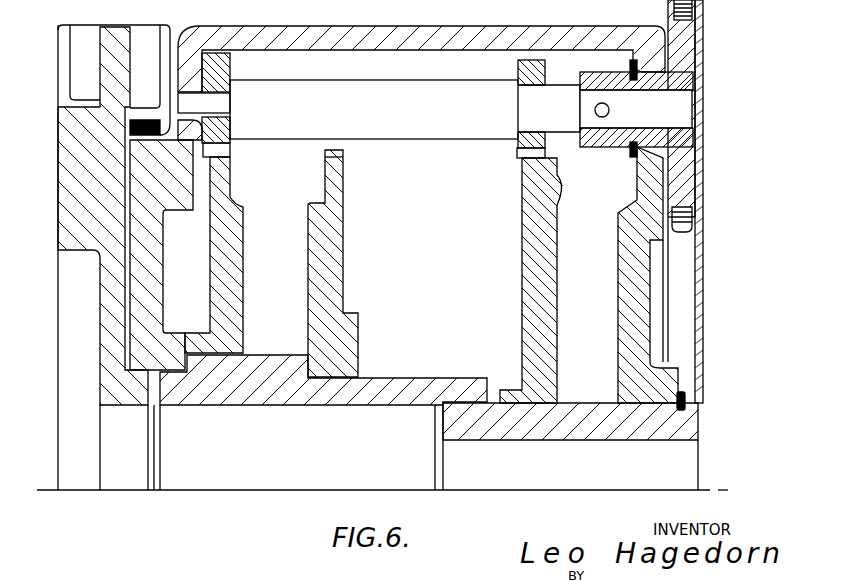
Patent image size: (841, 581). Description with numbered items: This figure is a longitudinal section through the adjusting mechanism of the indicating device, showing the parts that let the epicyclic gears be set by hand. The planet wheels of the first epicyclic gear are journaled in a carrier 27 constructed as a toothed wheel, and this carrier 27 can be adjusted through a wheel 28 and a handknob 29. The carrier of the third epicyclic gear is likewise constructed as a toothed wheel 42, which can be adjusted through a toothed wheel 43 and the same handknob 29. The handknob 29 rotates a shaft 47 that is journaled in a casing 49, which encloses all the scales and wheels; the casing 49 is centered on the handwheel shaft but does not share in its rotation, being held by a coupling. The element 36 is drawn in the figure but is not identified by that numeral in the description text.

The carrier 27 is at (243, 206).
The wheel 28 is at (230, 63).
The handknob 29 is at (686, 232).
The intermediate hub 36 is at (343, 200).
The toothed wheel 42 is at (560, 205).
The toothed wheel 43 is at (518, 67).
The shaft 47 is at (385, 123).
The casing 49 is at (617, 43).